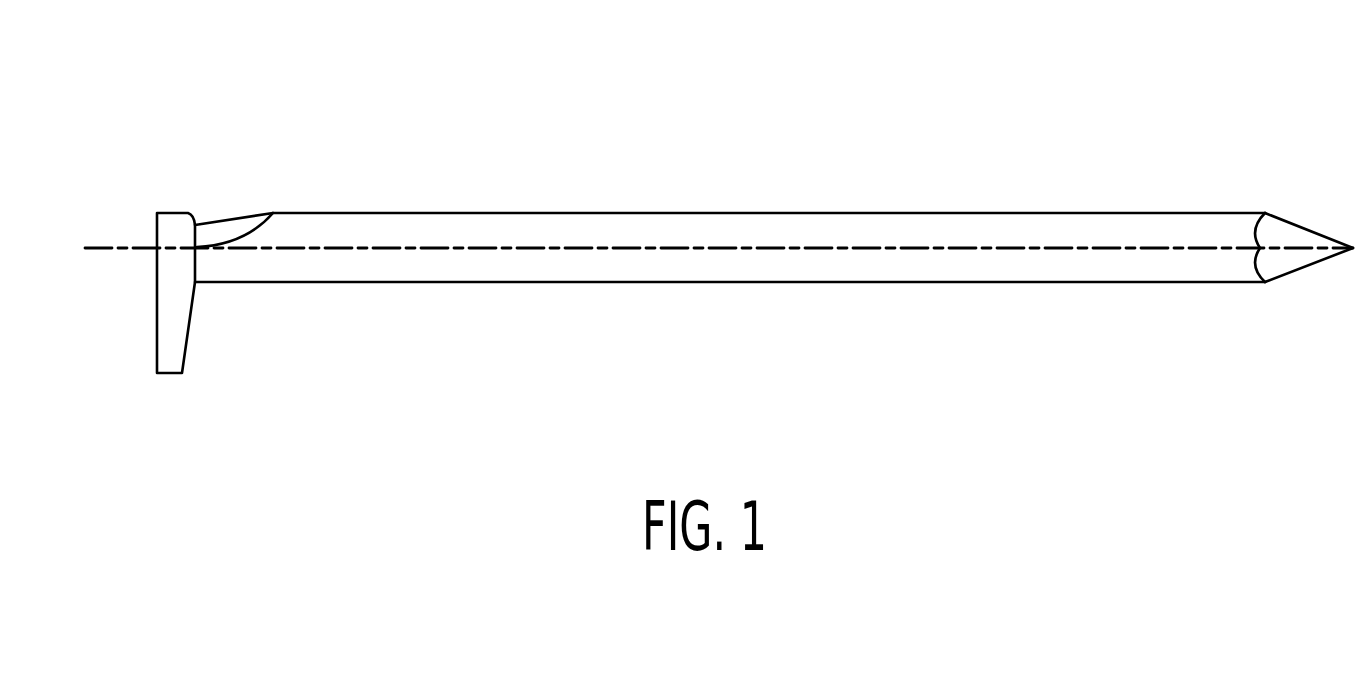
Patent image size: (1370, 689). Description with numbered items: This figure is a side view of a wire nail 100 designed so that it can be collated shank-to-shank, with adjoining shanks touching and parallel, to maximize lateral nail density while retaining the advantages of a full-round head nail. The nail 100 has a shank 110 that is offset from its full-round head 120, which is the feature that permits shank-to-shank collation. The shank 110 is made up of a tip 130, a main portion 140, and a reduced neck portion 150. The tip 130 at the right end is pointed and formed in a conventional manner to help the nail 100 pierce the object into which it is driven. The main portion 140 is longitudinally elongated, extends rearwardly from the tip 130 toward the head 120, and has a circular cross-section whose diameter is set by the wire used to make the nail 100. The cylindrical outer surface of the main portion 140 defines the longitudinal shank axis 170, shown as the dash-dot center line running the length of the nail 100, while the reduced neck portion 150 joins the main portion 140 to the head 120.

The nail 100 is at (510, 153).
The shank 110 is at (793, 317).
The full-round head 120 is at (168, 323).
The tip 130 is at (1293, 228).
The main portion 140 is at (755, 214).
The reduced neck portion 150 is at (250, 263).
The longitudinal shank axis 170 is at (110, 247).